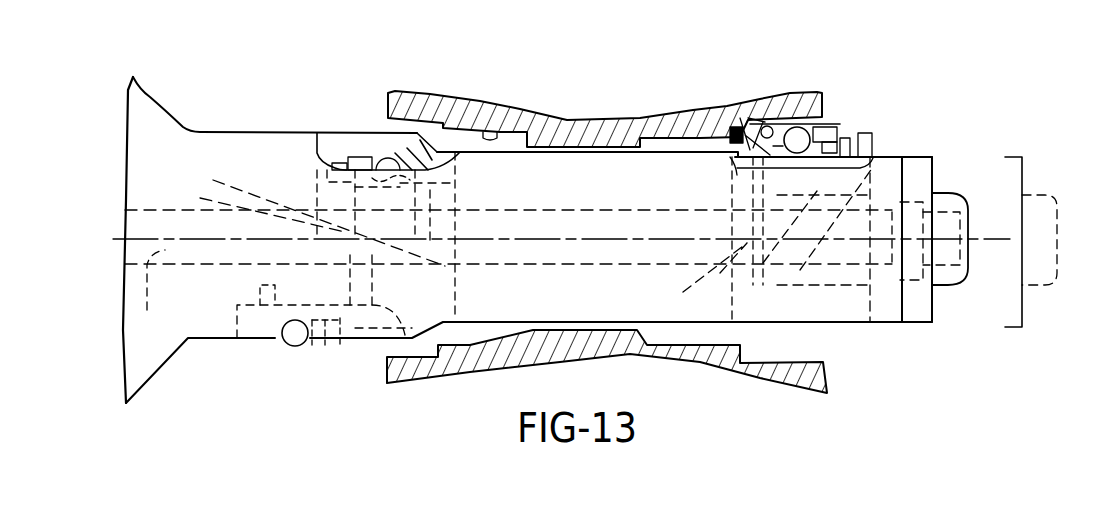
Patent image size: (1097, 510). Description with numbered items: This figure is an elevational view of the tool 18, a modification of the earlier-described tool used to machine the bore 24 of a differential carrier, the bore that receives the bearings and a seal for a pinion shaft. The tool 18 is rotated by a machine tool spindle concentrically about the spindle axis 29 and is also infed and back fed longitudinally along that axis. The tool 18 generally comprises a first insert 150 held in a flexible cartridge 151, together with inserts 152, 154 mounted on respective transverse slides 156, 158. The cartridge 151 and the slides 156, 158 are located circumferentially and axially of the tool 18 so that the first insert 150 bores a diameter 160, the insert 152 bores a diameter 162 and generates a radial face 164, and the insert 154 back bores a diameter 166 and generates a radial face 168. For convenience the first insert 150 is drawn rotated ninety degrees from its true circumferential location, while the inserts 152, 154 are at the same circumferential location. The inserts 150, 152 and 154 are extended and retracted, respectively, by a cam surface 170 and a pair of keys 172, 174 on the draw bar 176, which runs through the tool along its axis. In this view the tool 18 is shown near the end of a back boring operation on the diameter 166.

The tool 18 is at (150, 384).
The bore 24 is at (815, 345).
The spindle axis 29 is at (983, 239).
The first insert 150 is at (348, 353).
The flexible cartridge 151 is at (300, 348).
The insert 152 is at (410, 155).
The insert 154 is at (760, 118).
The transverse slide 156 is at (470, 198).
The transverse slide 158 is at (732, 200).
The diameter 160 is at (418, 358).
The diameter 162 is at (493, 133).
The radial face 164 is at (532, 113).
The diameter 166 is at (823, 118).
The radial face 168 is at (740, 145).
The cam surface 170 is at (330, 268).
The key 172 is at (322, 211).
The key 174 is at (764, 241).
The draw bar 176 is at (150, 296).